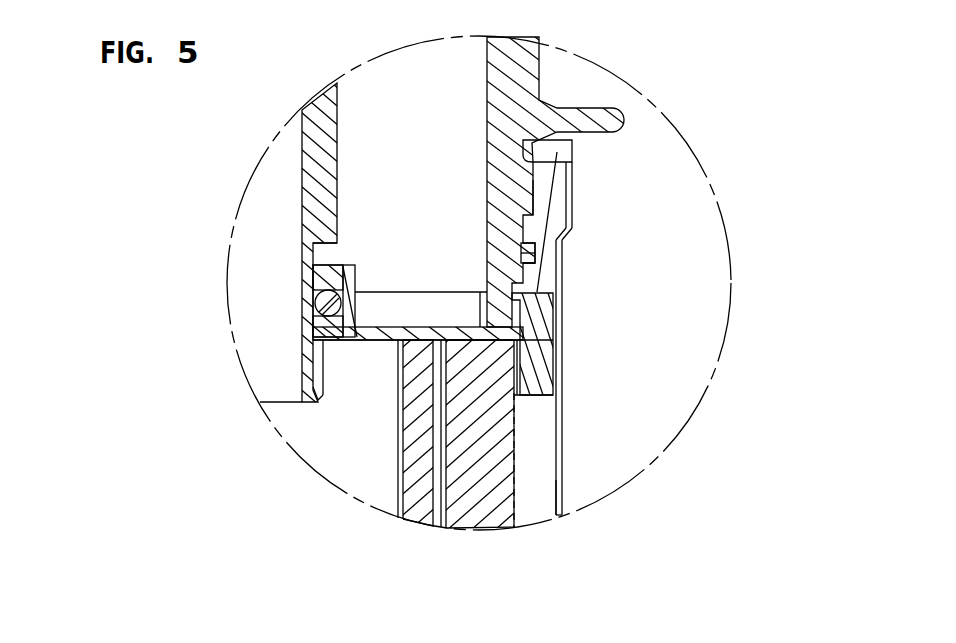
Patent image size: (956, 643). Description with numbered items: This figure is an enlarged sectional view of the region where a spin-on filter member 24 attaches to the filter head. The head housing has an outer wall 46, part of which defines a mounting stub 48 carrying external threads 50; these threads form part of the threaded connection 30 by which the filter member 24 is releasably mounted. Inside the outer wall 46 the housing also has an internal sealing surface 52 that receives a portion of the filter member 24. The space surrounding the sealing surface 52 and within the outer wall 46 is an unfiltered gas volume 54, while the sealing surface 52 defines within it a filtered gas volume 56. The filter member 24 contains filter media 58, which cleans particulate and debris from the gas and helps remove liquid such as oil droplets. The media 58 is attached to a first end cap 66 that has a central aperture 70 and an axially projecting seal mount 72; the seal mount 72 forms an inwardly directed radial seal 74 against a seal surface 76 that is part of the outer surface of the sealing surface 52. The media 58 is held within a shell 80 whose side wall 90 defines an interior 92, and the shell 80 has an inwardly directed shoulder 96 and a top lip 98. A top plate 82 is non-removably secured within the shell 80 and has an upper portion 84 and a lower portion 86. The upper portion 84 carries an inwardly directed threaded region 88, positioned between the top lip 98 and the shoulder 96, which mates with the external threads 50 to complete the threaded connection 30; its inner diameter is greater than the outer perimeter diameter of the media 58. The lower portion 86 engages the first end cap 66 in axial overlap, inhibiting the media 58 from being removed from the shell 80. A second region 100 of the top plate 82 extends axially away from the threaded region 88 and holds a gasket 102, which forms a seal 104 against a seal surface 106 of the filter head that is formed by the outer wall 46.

The filter member 24 is at (614, 410).
The threaded connection 30 is at (537, 186).
The outer wall 46 is at (532, 63).
The mounting stub 48 is at (487, 228).
The external threads 50 is at (537, 200).
The internal sealing surface 52 is at (318, 258).
The unfiltered gas volume 54 is at (406, 106).
The filtered gas volume 56 is at (276, 238).
The filter media 58 is at (497, 525).
The first end cap 66 is at (365, 350).
The central aperture 70 is at (317, 403).
The seal mount 72 is at (357, 283).
The radial seal 74 is at (313, 308).
The seal surface 76 is at (316, 320).
The shell 80 is at (560, 458).
The top plate 82 is at (565, 196).
The upper portion 84 is at (567, 170).
The lower portion 86 is at (543, 284).
The threaded region 88 is at (540, 207).
The side wall 90 is at (562, 368).
The interior 92 is at (548, 500).
The shoulder 96 is at (562, 236).
The top lip 98 is at (550, 156).
The second region 100 is at (522, 250).
The gasket 102 is at (528, 253).
The seal 104 is at (518, 283).
The seal surface 106 is at (527, 258).